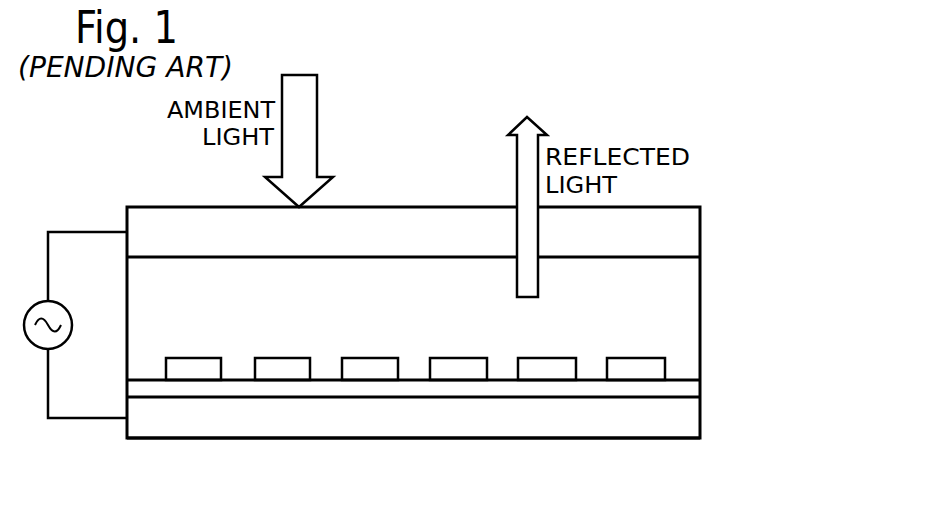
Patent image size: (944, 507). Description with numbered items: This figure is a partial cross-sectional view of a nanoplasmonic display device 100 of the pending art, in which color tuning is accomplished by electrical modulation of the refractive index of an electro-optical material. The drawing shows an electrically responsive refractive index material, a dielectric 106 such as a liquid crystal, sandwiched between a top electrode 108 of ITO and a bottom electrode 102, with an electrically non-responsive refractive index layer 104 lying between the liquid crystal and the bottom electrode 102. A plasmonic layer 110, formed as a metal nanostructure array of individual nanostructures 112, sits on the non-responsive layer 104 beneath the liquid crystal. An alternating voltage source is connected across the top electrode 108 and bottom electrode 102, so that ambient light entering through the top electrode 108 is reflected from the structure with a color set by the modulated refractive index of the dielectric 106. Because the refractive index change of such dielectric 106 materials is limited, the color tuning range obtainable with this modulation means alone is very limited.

The device 100 is at (672, 130).
The bottom electrode 102 is at (695, 423).
The electrically non-responsive refractive index layer 104 is at (695, 388).
The dielectric 106 is at (137, 276).
The top electrode (ITO) 108 is at (693, 233).
The plasmonic layer: metal nanostructure array 110 is at (420, 392).
The metal nanostructures 112 is at (272, 357).